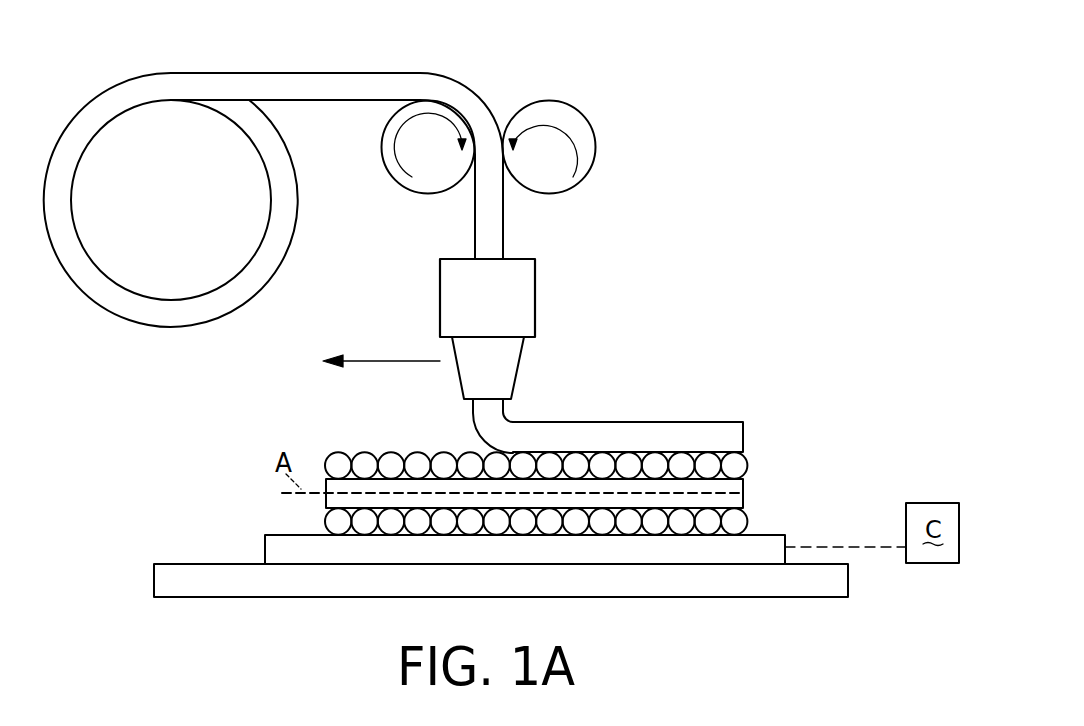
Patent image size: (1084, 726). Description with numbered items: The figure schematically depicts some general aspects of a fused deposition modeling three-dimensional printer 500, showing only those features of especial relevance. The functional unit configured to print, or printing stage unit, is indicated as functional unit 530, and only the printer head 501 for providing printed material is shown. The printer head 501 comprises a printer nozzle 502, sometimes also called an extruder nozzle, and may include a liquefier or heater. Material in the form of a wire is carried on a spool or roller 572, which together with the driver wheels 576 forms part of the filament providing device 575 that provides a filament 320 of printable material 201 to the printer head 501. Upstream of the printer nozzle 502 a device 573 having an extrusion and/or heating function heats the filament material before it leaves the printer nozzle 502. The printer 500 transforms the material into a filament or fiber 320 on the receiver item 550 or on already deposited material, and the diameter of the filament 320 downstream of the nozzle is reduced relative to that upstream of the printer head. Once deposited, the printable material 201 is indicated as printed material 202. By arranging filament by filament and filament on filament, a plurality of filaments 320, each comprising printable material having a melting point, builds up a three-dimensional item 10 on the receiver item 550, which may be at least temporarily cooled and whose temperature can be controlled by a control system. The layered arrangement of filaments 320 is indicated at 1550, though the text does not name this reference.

The spool or roller 572 is at (103, 64).
The extrusion and/or heating device 573 is at (572, 226).
The driver wheels 576 is at (496, 66).
The filament providing device 575 is at (613, 103).
The 3D printer 500 is at (780, 241).
The printer head 501 is at (522, 305).
The printer nozzle 502 is at (447, 410).
The functional unit configured to 3D print 530 is at (142, 374).
The printable material 201 is at (509, 418).
The printed material 202 is at (713, 433).
The filament 320 is at (718, 497).
The layered structure 1550 is at (230, 507).
The 3D item 10 is at (816, 449).
The receiver item 550 is at (234, 549).